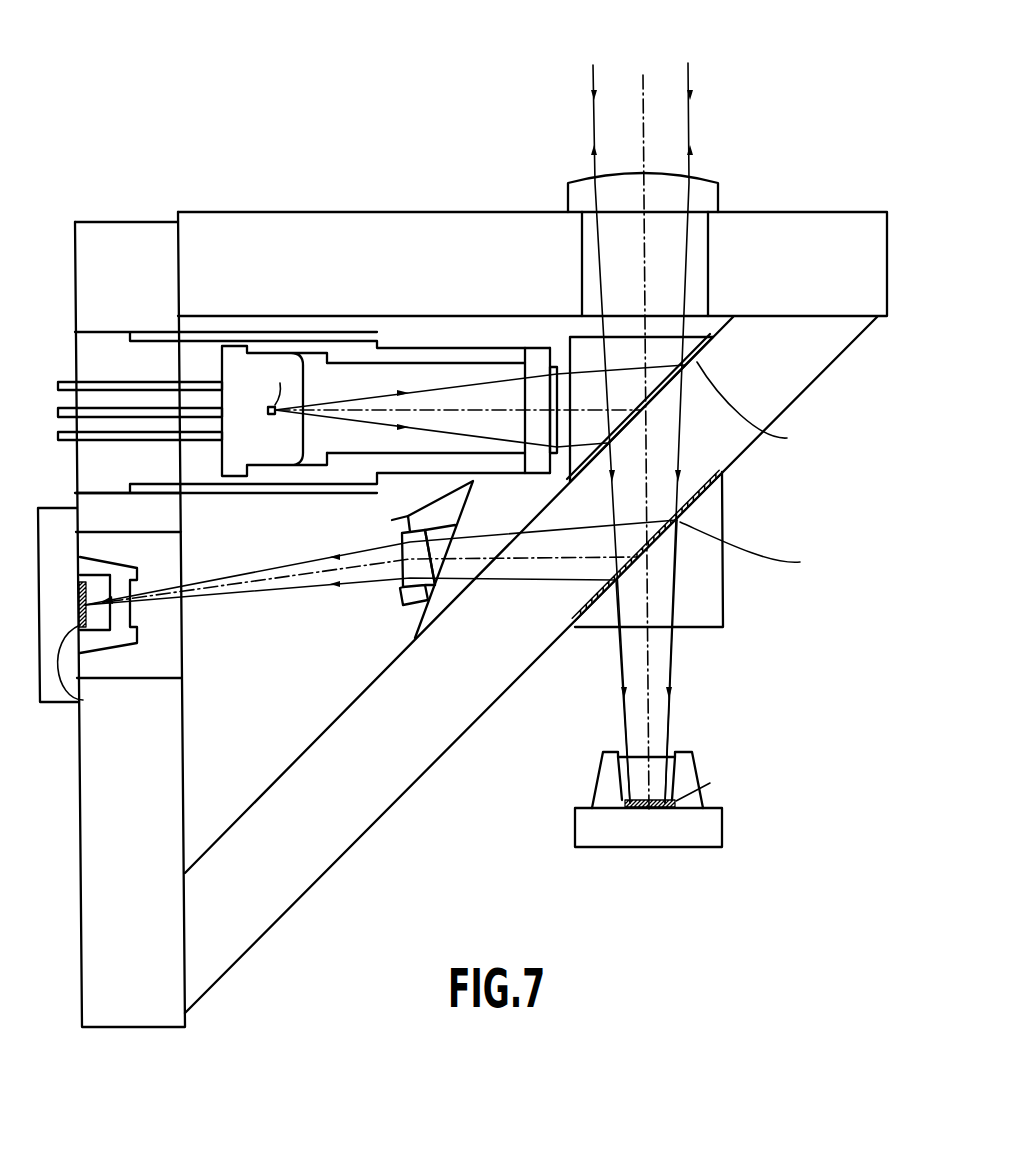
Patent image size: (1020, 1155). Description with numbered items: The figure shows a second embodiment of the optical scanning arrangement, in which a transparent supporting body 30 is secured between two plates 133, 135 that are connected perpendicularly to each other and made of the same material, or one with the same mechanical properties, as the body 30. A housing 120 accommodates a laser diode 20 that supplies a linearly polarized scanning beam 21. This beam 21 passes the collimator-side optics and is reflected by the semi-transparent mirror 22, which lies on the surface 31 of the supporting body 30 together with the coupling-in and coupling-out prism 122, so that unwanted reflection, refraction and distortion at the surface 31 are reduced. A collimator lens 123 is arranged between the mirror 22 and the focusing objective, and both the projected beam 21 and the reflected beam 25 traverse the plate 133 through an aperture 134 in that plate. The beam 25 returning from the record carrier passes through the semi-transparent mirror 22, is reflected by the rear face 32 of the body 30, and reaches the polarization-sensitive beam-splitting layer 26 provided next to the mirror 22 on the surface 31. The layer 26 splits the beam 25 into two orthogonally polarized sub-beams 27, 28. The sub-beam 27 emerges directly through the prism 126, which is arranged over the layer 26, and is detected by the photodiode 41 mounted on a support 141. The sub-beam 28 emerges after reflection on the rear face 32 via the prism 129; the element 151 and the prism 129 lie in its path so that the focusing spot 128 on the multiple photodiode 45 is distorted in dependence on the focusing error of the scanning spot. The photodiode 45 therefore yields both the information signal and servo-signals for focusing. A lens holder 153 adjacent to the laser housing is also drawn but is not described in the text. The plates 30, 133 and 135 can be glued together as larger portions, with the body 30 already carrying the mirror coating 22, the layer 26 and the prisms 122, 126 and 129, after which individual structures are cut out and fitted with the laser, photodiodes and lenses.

The laser diode 20 is at (273, 415).
The scanning beam 21 is at (397, 421).
The semi-transparent mirror 22 is at (697, 358).
The reflected beam 25 is at (672, 433).
The beam-splitting layer 26 is at (707, 497).
The sub-beam 27 is at (660, 663).
The sub-beam 28 is at (360, 575).
The transparent supporting body 30 is at (531, 665).
The surface of the supporting body 31 is at (390, 667).
The rear face of the supporting body 32 is at (488, 712).
The photodiode 41 is at (642, 810).
The multiple photodiode 45 is at (80, 617).
The housing 120 is at (238, 447).
The prism 122 is at (587, 342).
The collimator lens 123 is at (710, 195).
The prism 126 is at (712, 570).
The focusing spot 128 is at (102, 608).
The prism 129 is at (480, 494).
The plate 133 is at (310, 228).
The aperture 134 is at (610, 238).
The plate 135 is at (172, 753).
The support 141 is at (692, 837).
The element 151 is at (403, 527).
The lens holder 153 is at (537, 360).